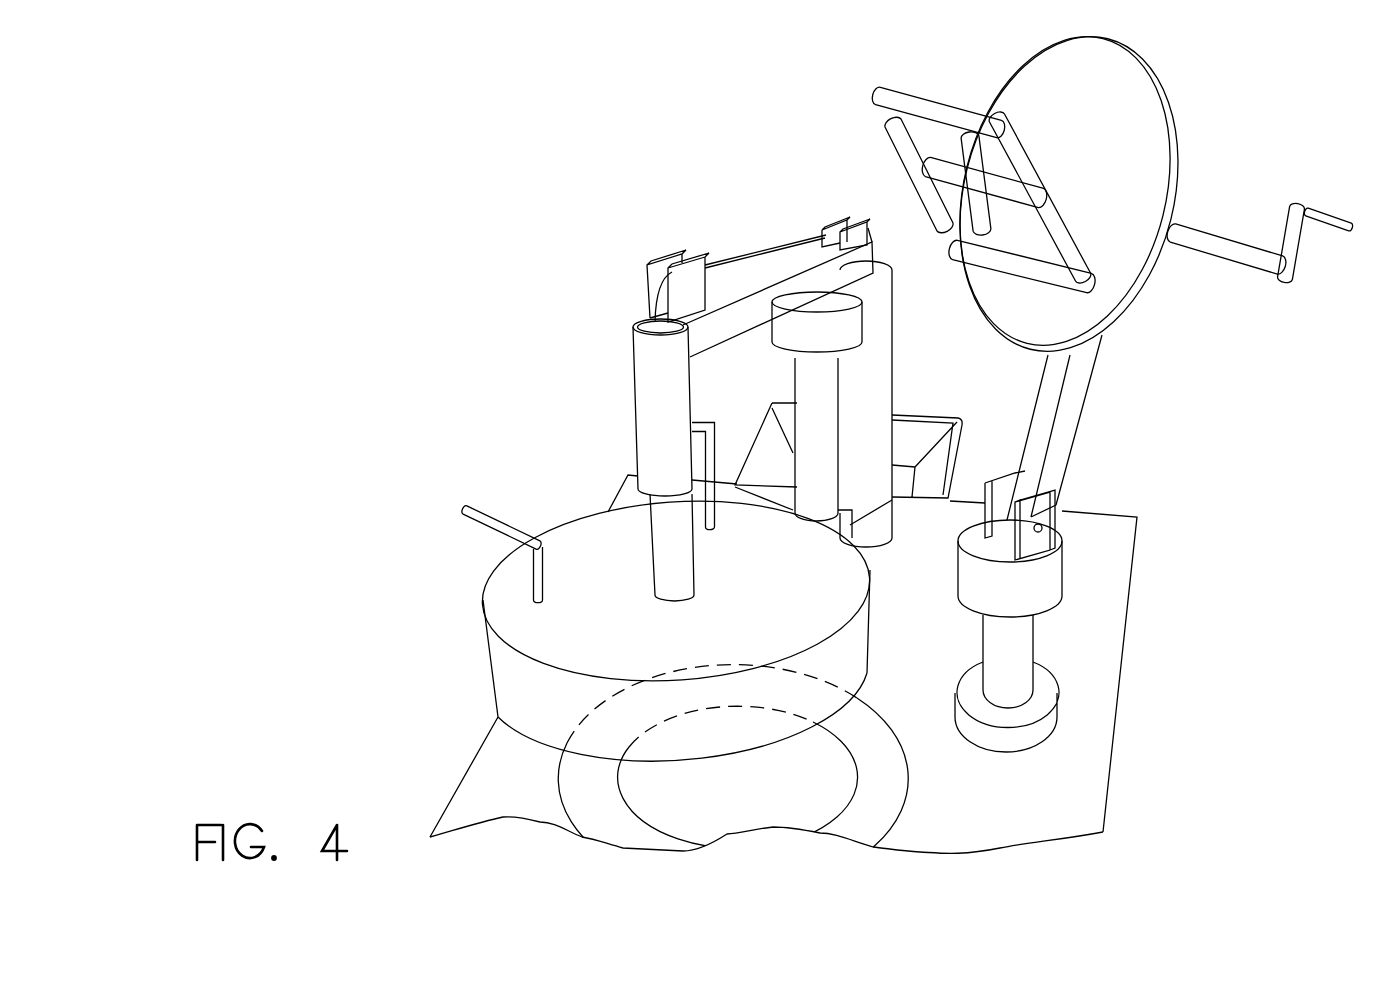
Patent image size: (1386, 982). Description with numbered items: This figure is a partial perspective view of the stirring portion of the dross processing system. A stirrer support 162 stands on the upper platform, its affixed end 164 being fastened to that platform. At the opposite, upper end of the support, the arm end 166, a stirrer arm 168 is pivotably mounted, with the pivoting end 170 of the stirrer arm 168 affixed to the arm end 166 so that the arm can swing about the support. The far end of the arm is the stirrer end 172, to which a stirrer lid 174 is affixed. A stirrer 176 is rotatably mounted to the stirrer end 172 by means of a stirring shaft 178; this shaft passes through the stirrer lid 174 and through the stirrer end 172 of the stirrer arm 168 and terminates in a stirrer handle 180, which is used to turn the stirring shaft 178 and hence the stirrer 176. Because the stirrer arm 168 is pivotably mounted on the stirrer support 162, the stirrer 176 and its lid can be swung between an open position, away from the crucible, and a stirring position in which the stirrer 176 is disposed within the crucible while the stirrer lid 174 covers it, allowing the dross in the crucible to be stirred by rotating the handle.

The stirrer support 162 is at (1022, 653).
The affixed end 164 is at (1070, 721).
The arm end 166 is at (1068, 571).
The stirrer arm 168 is at (1069, 401).
The pivoting end 170 is at (1080, 503).
The stirrer end 172 is at (1128, 320).
The stirrer lid 174 is at (1162, 85).
The stirrer 176 is at (925, 102).
The stirring shaft 178 is at (993, 187).
The stirrer handle 180 is at (1282, 266).